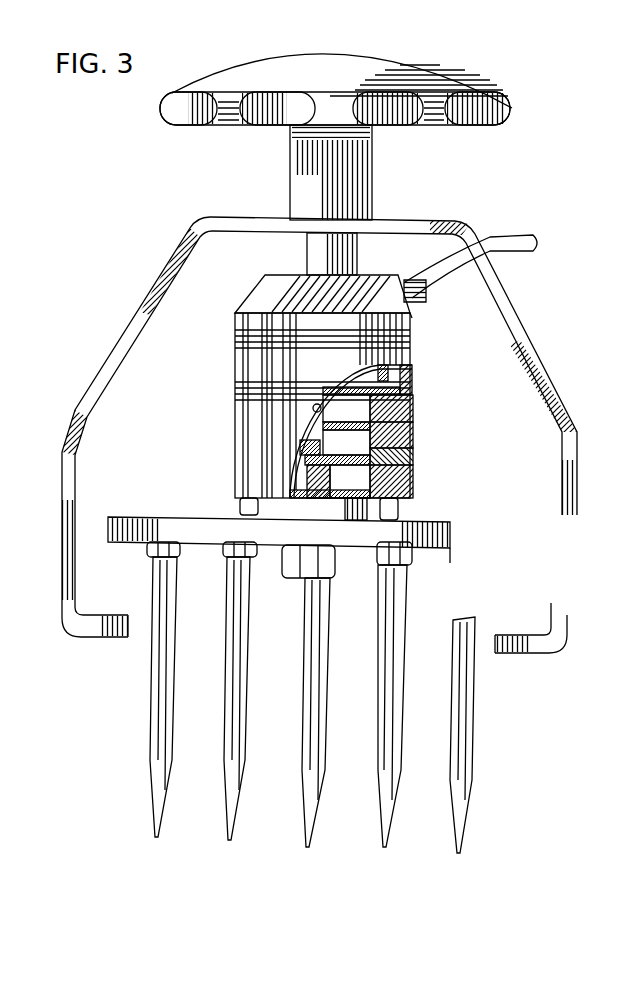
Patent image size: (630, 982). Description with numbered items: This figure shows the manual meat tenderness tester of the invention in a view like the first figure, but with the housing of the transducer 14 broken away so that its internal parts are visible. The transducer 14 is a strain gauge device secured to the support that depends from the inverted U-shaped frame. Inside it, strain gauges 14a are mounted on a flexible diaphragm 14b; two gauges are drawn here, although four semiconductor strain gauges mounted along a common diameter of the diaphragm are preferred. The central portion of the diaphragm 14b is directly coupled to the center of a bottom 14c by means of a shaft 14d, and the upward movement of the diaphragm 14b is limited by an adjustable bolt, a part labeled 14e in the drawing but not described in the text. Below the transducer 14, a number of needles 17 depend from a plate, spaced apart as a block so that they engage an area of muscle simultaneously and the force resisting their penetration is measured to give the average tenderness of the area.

The transducer 14 is at (415, 357).
The strain gauges 14a is at (411, 432).
The flexible diaphragm 14b is at (411, 480).
The bottom 14c is at (357, 507).
The shaft 14d is at (287, 480).
The upper insert 14e is at (410, 408).
The needles 17 is at (383, 670).